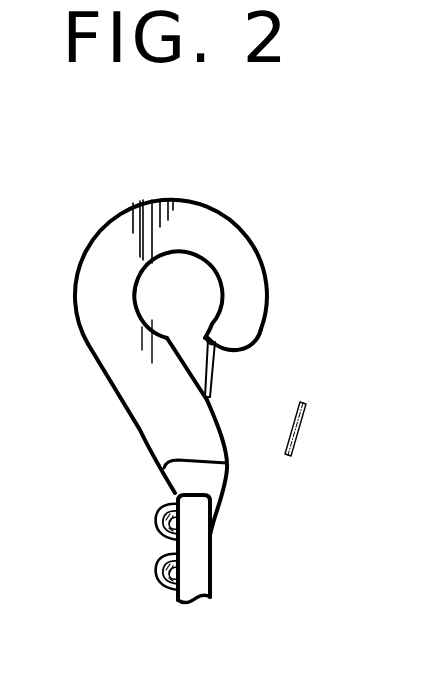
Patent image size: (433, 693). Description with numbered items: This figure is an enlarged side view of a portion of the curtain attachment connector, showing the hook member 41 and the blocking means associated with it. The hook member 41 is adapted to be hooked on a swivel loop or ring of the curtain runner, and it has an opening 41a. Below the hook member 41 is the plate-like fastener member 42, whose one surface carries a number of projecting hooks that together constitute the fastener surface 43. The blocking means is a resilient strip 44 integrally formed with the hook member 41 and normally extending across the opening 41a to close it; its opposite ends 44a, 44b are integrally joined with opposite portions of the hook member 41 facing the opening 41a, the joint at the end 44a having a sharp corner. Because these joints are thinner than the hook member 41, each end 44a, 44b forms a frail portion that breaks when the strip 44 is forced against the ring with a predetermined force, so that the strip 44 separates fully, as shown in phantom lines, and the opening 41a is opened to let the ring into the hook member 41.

The hook member 41 is at (99, 263).
The opening 41a is at (219, 380).
The fastener member 42 is at (198, 573).
The fastener surface 43 is at (156, 570).
The resilient strip 44 is at (206, 350).
The end of resilient strip 44a is at (212, 398).
The end of resilient strip 44b is at (214, 353).